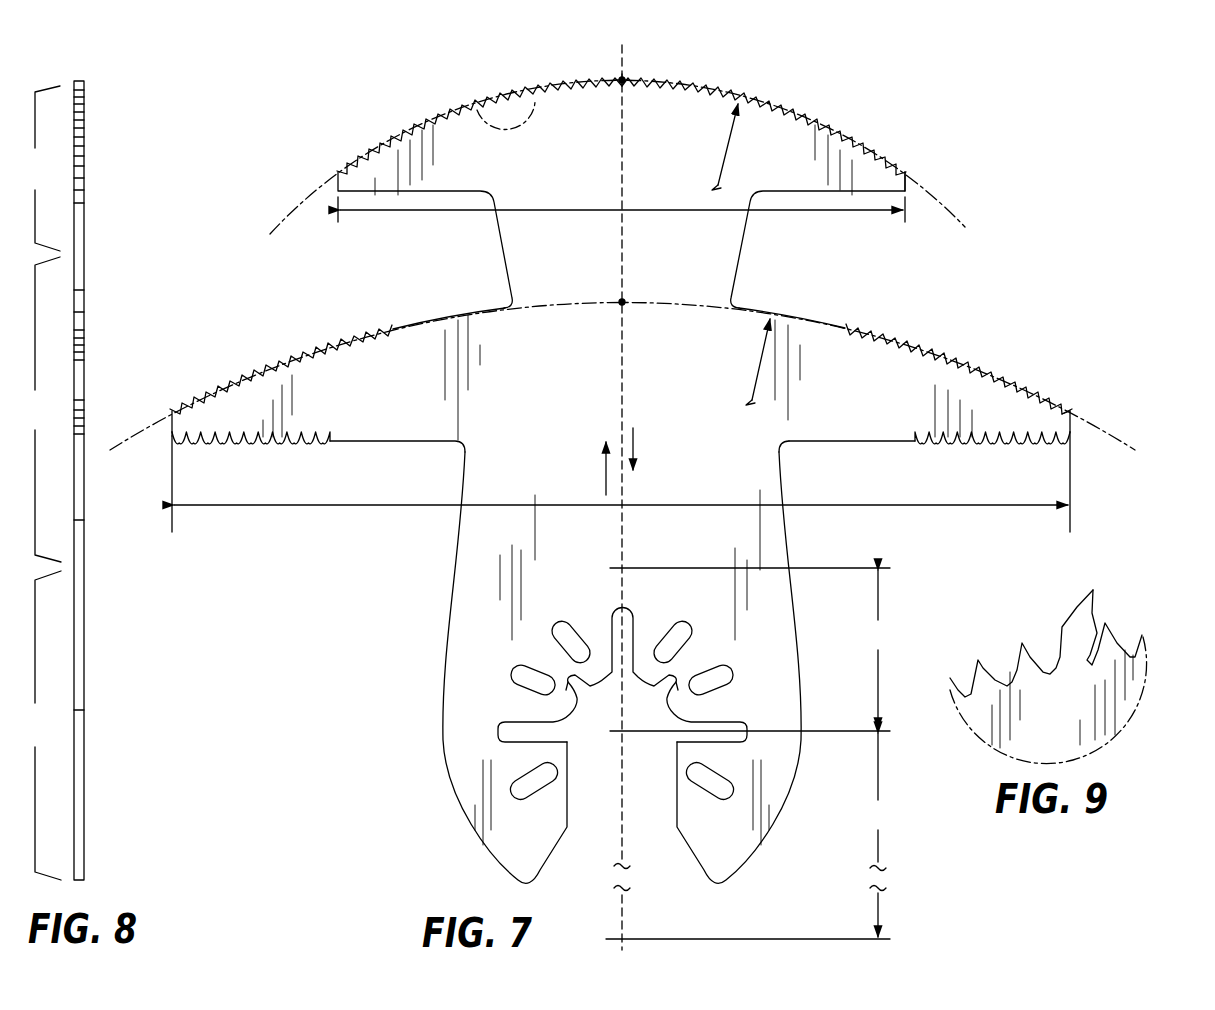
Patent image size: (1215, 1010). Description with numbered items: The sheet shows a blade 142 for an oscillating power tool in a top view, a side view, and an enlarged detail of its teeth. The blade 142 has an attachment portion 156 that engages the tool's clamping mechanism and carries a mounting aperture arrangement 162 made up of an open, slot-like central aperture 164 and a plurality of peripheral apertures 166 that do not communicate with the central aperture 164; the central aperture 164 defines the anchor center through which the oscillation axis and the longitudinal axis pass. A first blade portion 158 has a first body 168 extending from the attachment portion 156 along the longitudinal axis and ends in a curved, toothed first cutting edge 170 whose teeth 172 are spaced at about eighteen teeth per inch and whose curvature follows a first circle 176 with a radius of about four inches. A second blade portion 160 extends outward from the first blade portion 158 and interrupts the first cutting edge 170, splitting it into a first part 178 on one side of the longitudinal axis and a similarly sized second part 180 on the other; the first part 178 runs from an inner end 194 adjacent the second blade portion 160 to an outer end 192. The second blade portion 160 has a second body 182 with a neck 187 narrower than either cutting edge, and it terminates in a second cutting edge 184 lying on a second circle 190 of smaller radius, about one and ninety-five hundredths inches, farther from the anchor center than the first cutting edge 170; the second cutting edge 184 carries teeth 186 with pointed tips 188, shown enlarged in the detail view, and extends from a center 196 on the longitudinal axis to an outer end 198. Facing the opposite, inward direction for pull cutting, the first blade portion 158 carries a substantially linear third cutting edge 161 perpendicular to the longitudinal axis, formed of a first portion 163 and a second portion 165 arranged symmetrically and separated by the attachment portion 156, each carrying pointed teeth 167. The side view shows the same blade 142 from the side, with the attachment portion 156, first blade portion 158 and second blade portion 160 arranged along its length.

In FIG. 7, the blade 142 is at (790, 65).
In FIG. 8, the blade 142 is at (88, 72).
In FIG. 7, the attachment portion 156 is at (478, 720).
In FIG. 8, the attachment portion 156 is at (51, 725).
In FIG. 7, the first blade portion 158 is at (330, 396).
In FIG. 8, the first blade portion 158 is at (51, 409).
In FIG. 7, the second blade portion 160 is at (848, 138).
In FIG. 8, the second blade portion 160 is at (51, 168).
In FIG. 7, the third cutting edge 161 is at (267, 443).
In FIG. 7, the mounting aperture arrangement 162 is at (702, 644).
In FIG. 7, the first portion 163 is at (256, 433).
In FIG. 7, the central aperture 164 is at (672, 708).
In FIG. 7, the second portion 165 is at (1050, 443).
In FIG. 7, the peripheral apertures 166 is at (530, 680).
In FIG. 7, the teeth 167 is at (925, 443).
In FIG. 7, the first body 168 is at (508, 380).
In FIG. 7, the first cutting edge 170 is at (300, 353).
In FIG. 7, the teeth 172 is at (374, 331).
In FIG. 7, the first circle 176 is at (1118, 428).
In FIG. 7, the first part 178 is at (236, 378).
In FIG. 7, the second part 180 is at (1079, 395).
In FIG. 7, the second body 182 is at (530, 228).
In FIG. 7, the second cutting edge 184 is at (363, 155).
In FIG. 7, the teeth 186 is at (430, 130).
In FIG. 9, the teeth 186 is at (1017, 672).
In FIG. 7, the neck 187 is at (738, 272).
In FIG. 9, the pointed tip 188 is at (1093, 590).
In FIG. 7, the second circle 190 is at (945, 195).
In FIG. 7, the outer end 192 is at (1075, 408).
In FIG. 7, the inner end 194 is at (849, 328).
In FIG. 7, the center 196 is at (627, 77).
In FIG. 7, the outer end 198 is at (912, 170).